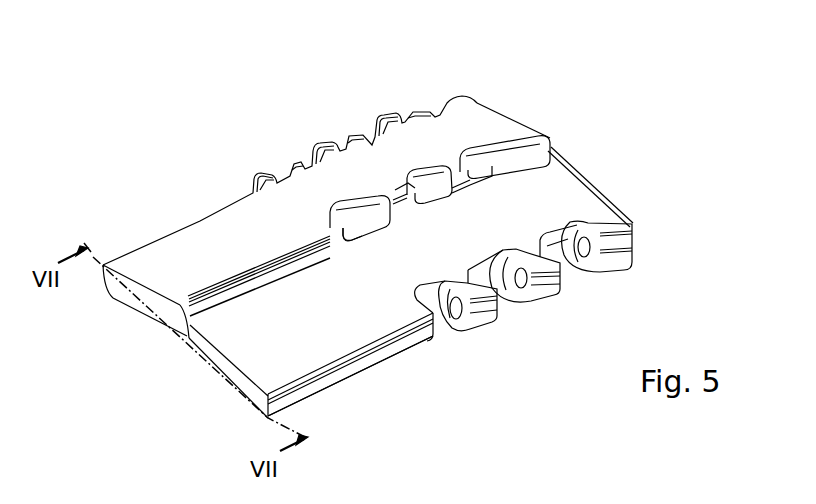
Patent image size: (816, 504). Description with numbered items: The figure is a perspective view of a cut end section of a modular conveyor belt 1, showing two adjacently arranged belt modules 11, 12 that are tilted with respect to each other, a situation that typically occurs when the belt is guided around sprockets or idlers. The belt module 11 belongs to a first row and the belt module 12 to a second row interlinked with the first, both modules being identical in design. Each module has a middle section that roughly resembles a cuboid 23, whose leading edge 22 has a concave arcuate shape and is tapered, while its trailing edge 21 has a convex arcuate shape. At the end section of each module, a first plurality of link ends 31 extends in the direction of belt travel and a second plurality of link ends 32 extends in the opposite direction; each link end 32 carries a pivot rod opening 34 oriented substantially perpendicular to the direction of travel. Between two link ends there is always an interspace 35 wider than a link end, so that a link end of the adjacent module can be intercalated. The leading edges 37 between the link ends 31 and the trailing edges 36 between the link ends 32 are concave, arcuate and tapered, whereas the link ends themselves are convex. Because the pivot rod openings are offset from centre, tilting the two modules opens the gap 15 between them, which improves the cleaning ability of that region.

The modular conveyor belt 1 is at (112, 140).
The belt module 11 is at (570, 192).
The belt module 12 is at (465, 122).
The gap 15 is at (292, 260).
The trailing edge 21 is at (265, 414).
The leading edge 22 is at (189, 336).
The cuboid 23 is at (327, 312).
The link end 31 is at (432, 190).
The link end 32 is at (388, 197).
The pivot rod opening 34 is at (458, 308).
The interspace 35 is at (370, 132).
The trailing edge 36 is at (401, 185).
The leading edge 37 is at (393, 217).